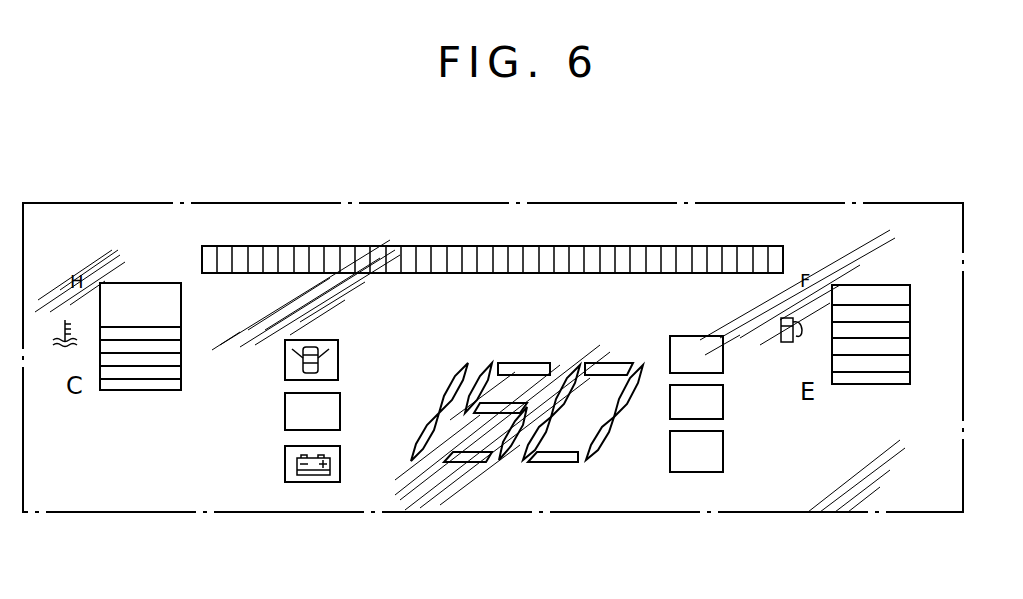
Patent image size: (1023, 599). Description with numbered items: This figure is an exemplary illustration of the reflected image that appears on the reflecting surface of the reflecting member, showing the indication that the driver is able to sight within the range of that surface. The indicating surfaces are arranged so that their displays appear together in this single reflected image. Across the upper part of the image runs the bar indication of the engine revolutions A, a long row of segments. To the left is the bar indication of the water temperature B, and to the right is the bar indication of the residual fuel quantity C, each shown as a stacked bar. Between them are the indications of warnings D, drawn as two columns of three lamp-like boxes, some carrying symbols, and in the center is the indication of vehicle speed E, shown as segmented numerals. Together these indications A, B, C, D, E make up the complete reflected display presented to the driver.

The bar indication of engine revolutions A is at (484, 247).
The bar indication of water temperature B is at (152, 285).
The bar indication of residual fuel quantity C is at (903, 345).
The indications of warnings D is at (285, 360).
The indication of vehicle speed E is at (512, 462).